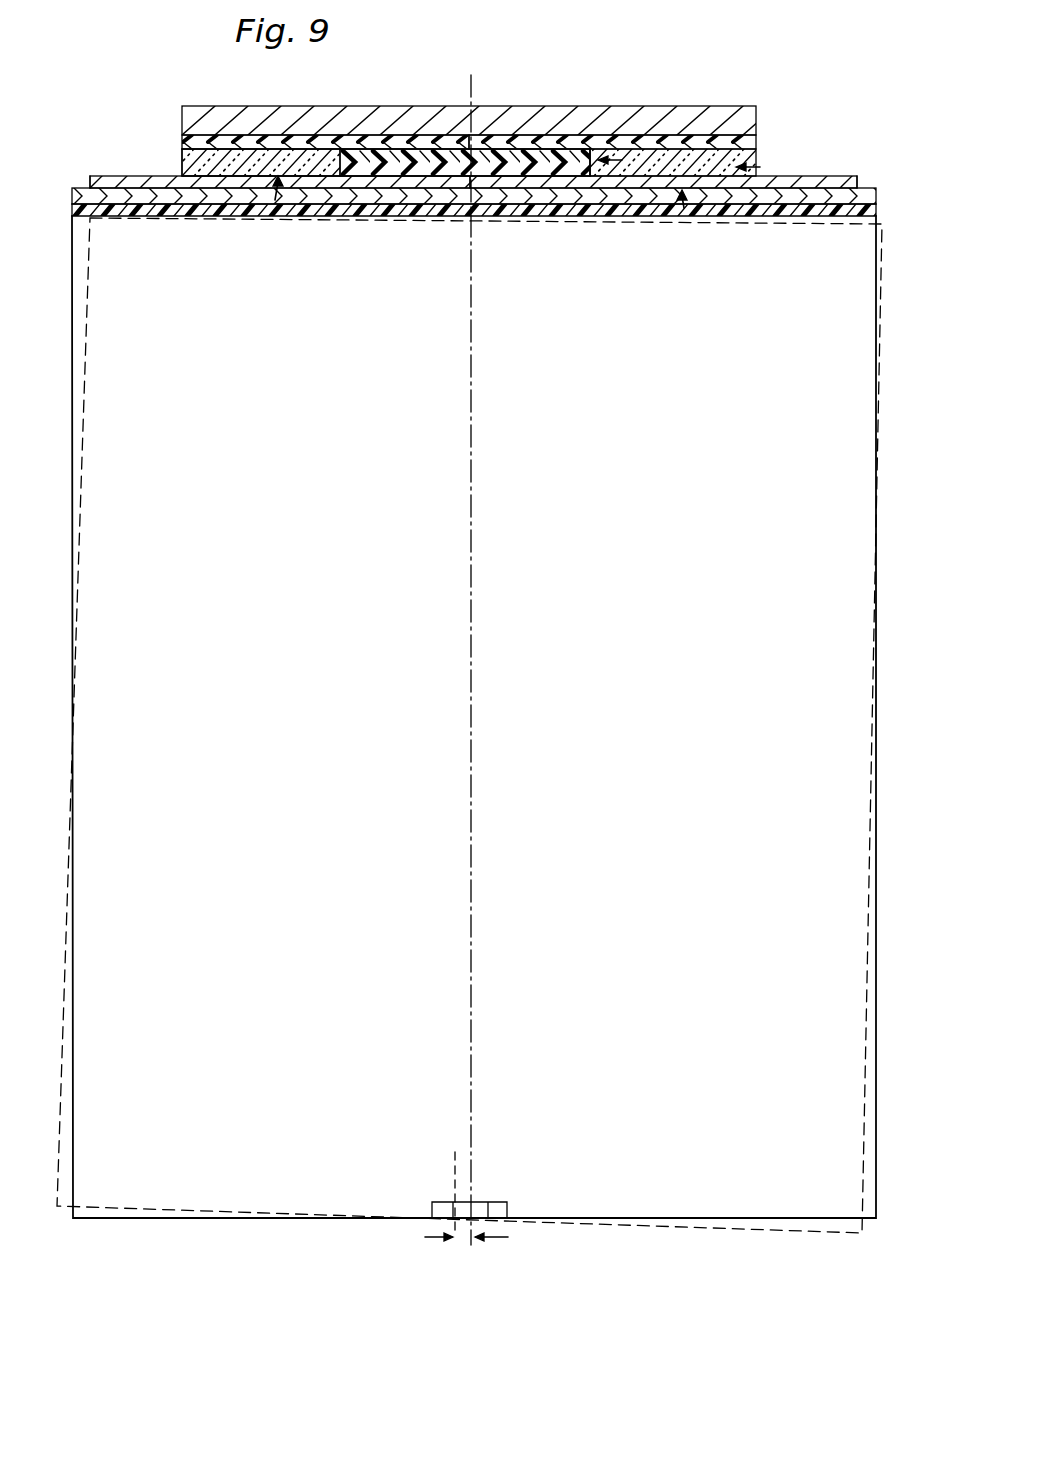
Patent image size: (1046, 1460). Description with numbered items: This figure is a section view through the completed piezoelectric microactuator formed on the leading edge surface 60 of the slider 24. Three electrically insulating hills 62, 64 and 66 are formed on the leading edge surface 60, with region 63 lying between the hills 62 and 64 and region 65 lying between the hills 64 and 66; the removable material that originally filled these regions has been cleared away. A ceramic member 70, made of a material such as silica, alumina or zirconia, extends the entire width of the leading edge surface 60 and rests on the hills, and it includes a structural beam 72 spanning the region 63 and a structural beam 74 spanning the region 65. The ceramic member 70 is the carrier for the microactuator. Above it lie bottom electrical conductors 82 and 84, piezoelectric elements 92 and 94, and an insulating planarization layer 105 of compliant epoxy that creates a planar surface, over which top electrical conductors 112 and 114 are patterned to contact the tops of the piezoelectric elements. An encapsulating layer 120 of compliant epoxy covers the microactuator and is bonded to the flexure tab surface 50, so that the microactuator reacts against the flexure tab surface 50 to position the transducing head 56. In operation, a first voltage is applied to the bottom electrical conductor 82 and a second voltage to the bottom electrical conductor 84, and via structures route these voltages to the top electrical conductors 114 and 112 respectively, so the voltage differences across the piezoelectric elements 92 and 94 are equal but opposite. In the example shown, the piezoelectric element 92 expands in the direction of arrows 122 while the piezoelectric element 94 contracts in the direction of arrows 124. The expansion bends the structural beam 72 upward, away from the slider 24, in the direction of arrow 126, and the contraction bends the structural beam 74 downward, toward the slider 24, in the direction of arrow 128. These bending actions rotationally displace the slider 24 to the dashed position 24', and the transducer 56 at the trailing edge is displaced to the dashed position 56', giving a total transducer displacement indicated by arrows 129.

The slider 24 is at (494, 717).
The displaced position of slider 24' is at (491, 725).
The flexure tab surface 50 is at (607, 106).
The transducing head 56 is at (502, 1189).
The displaced position of transducer 56' is at (424, 1190).
The leading edge surface 60 is at (297, 216).
The hill 62 is at (123, 216).
The region 63 is at (335, 216).
The hill 64 is at (507, 216).
The region 65 is at (728, 216).
The hill 66 is at (822, 216).
The ceramic member 70 is at (72, 193).
The structural beam 72 is at (211, 216).
The structural beam 74 is at (623, 216).
The bottom electrical conductor 82 is at (88, 184).
The bottom electrical conductor 84 is at (858, 182).
The piezoelectric element 92 is at (162, 175).
The piezoelectric element 94 is at (766, 174).
The insulating planarization layer 105 is at (478, 135).
The top electrical conductor 112 is at (180, 152).
The top electrical conductor 114 is at (757, 160).
The encapsulating layer 120 is at (757, 144).
The arrows 122 is at (176, 166).
The arrows 124 is at (622, 158).
The arrow 126 is at (275, 200).
The arrow 128 is at (684, 208).
The arrows 129 is at (462, 1243).